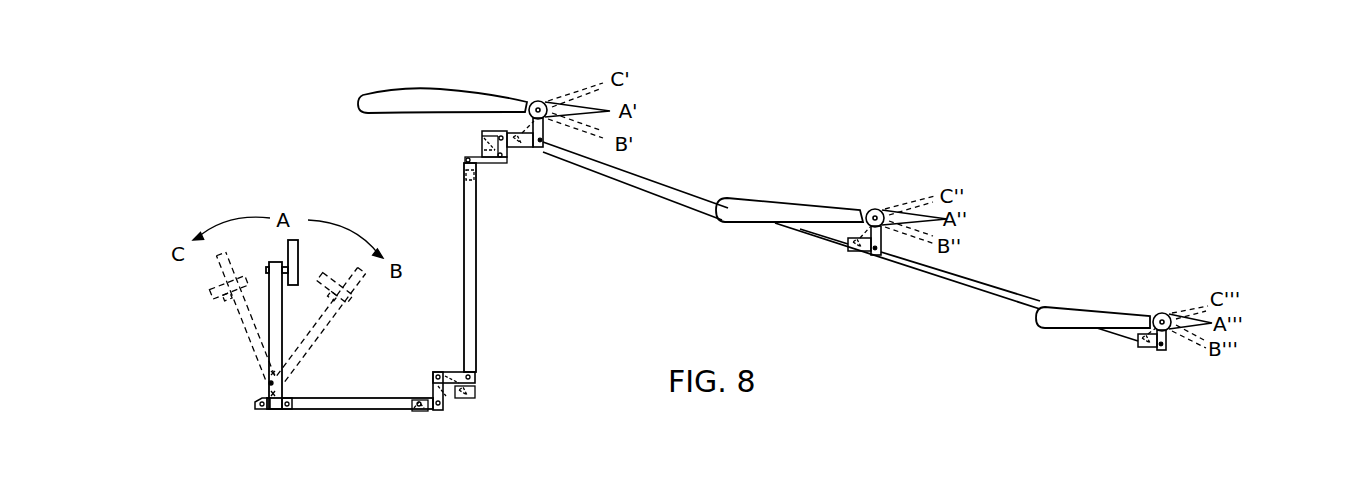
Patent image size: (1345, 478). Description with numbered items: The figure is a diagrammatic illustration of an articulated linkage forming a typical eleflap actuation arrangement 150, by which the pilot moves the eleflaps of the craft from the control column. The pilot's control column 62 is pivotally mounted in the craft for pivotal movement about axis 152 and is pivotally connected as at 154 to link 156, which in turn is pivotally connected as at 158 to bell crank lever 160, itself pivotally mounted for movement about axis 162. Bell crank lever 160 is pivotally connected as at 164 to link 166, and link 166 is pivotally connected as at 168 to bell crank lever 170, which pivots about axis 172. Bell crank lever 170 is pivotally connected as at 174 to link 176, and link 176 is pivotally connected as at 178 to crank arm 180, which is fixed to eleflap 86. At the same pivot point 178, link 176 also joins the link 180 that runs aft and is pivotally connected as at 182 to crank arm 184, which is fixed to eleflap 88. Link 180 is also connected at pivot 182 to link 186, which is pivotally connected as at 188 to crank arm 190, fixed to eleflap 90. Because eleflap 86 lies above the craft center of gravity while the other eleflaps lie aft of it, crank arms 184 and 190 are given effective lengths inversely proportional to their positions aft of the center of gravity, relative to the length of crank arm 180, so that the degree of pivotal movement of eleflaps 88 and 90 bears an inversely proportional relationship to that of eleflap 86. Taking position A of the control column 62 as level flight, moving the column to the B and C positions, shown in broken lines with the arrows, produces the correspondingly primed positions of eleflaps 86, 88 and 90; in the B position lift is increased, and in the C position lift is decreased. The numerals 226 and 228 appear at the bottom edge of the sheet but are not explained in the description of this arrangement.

The pilot's control column 62 is at (197, 318).
The eleflap 86 is at (562, 107).
The eleflap 88 is at (890, 207).
The eleflap 90 is at (1172, 313).
The eleflap actuation arrangement 150 is at (191, 404).
The axis 152 is at (270, 382).
The pivotal connection 154 is at (272, 412).
The link 156 is at (343, 403).
The pivotal connection 158 is at (438, 413).
The bell crank lever 160 is at (447, 403).
The axis 162 is at (433, 375).
The pivotal connection 164 is at (475, 375).
The link 166 is at (468, 273).
The pivotal connection 168 is at (468, 158).
The bell crank lever 170 is at (488, 165).
The axis 172 is at (503, 163).
The pivotal connection 174 is at (497, 130).
The link 176 is at (527, 127).
The pivot point 178 is at (541, 147).
The crank arm 180 is at (511, 130).
The pivotal connection 182 is at (877, 256).
The crank arm 184 is at (884, 244).
The link 186 is at (973, 283).
The pivotal connection 188 is at (1162, 348).
The crank arm 190 is at (1168, 337).
The reference element 226 is at (930, 471).
The reference element 228 is at (1094, 471).